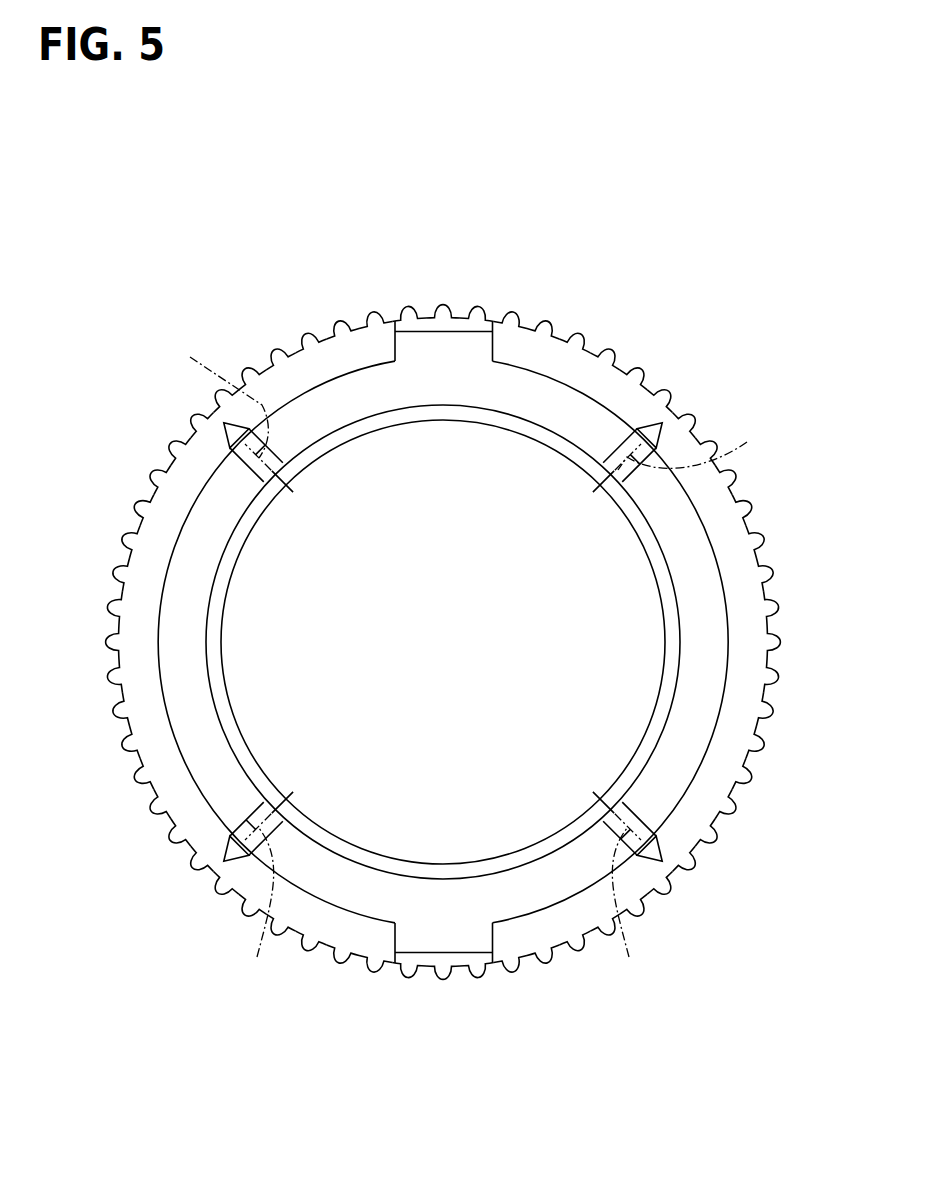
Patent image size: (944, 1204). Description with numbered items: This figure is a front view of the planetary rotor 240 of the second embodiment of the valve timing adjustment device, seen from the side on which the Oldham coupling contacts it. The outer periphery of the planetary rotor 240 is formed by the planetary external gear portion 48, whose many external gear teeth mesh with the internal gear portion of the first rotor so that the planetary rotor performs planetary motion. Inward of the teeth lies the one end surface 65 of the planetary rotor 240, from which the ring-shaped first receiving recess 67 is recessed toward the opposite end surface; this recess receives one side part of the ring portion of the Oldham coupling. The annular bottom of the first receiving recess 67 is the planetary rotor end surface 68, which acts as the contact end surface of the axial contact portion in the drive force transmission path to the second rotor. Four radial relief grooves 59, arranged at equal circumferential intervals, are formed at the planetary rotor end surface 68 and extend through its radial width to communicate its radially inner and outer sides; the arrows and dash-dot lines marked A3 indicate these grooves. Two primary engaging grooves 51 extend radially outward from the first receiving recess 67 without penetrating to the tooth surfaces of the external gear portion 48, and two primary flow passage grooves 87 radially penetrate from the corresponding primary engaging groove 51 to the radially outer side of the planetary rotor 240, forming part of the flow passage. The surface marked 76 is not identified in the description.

The planetary external gear portion 48 is at (195, 413).
The planetary rotor 240 is at (245, 365).
The primary engaging grooves 51 is at (473, 332).
The primary flow passage grooves 87 is at (400, 316).
The one end surface 65 is at (604, 384).
The first receiving recess 67 is at (334, 374).
The planetary rotor end surface 68 is at (708, 620).
The inner peripheral surface 76 is at (212, 478).
The radial relief grooves 59 is at (235, 447).
The rotation direction A3 is at (467, 658).